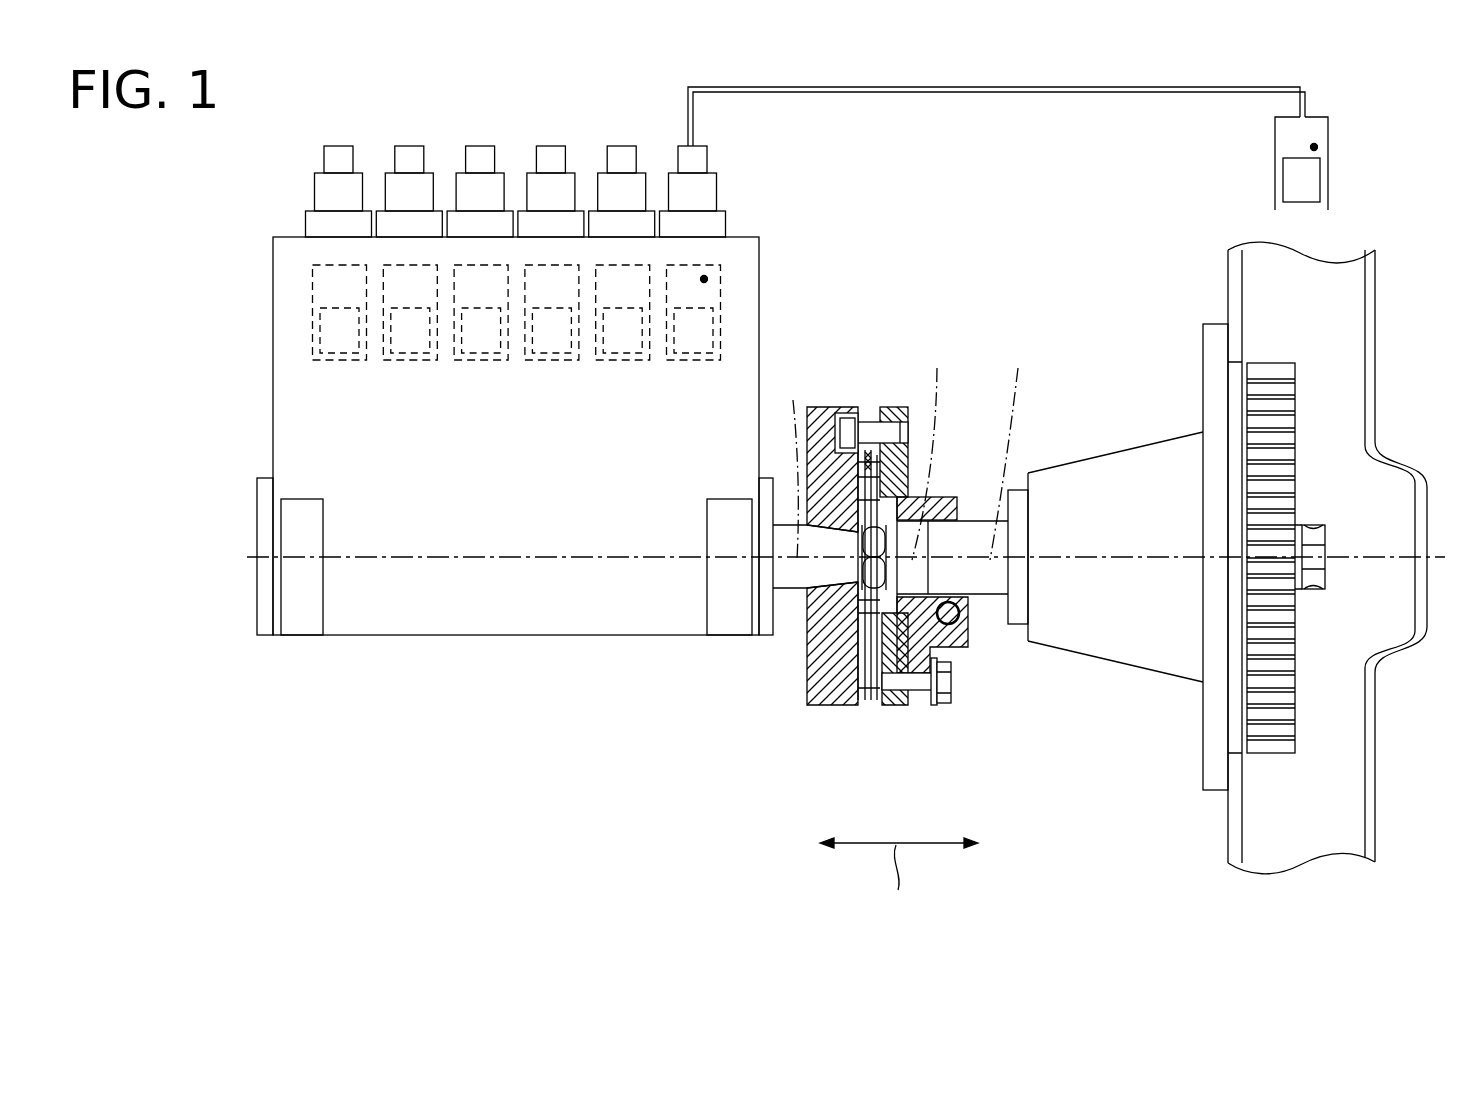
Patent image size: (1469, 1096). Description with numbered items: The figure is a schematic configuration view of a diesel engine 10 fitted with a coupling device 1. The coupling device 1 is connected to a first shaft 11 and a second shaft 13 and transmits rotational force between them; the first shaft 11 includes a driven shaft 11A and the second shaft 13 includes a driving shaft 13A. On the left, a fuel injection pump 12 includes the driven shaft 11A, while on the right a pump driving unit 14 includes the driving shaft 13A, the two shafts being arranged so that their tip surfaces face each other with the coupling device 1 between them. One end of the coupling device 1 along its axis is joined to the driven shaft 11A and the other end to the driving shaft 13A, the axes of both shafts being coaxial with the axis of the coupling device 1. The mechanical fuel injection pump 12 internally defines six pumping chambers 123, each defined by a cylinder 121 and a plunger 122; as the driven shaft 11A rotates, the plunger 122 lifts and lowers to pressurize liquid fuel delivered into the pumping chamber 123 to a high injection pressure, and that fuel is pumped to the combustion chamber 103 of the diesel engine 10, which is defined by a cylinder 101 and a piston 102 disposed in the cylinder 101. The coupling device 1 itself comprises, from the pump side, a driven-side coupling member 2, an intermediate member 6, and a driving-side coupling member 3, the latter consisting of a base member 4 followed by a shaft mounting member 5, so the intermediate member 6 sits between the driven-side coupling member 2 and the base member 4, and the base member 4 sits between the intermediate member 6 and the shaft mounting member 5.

The coupling device 1 is at (887, 558).
The driven-side coupling member 2 is at (830, 706).
The driving-side coupling member 3 is at (924, 616).
The base member 4 is at (895, 706).
The shaft mounting member 5 is at (918, 706).
The intermediate member 6 is at (868, 706).
The diesel engine 10 is at (290, 97).
The first shaft 11 is at (785, 600).
The driven shaft 11A is at (797, 600).
The fuel injection pump 12 is at (549, 437).
The second shaft 13 is at (982, 598).
The driving shaft 13A is at (1000, 600).
The pump driving unit 14 is at (1112, 661).
The cylinder 101 is at (1328, 165).
The piston 102 is at (1320, 195).
The combustion chamber 103 is at (1314, 147).
The cylinder 121 is at (720, 297).
The plunger 122 is at (714, 325).
The pumping chamber 123 is at (704, 279).